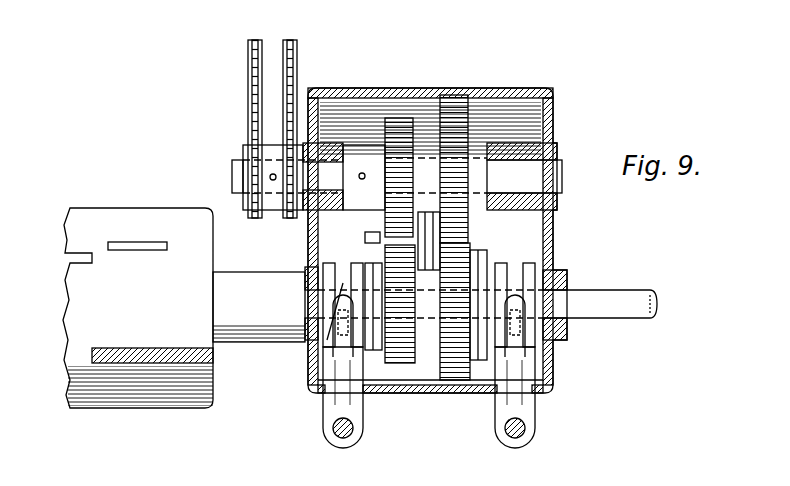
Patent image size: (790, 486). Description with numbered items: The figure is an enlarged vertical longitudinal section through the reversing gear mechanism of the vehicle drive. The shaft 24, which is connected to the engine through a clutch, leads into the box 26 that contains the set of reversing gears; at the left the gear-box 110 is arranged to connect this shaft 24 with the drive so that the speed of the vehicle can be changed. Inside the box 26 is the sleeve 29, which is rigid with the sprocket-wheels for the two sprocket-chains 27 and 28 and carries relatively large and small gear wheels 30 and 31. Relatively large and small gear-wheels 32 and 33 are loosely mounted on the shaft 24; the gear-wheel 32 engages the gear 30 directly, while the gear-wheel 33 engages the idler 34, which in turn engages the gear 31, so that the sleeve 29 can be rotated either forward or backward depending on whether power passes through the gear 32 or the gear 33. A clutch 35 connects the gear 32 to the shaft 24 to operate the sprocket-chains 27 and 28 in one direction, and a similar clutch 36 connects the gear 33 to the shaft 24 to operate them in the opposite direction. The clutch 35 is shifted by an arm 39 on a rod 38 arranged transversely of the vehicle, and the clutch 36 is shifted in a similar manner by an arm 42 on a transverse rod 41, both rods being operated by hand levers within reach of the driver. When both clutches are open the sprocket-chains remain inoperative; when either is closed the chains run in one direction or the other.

The gear-box 110 is at (88, 217).
The sprocket-chain 27 is at (250, 87).
The sprocket-chain 28 is at (297, 62).
The sleeve 29 is at (357, 152).
The gear wheel 30 is at (457, 108).
The gear wheel 31 is at (408, 117).
The box 26 is at (548, 250).
The shaft 24 is at (612, 297).
The gear-wheel 32 is at (457, 381).
The gear-wheel 33 is at (405, 364).
The idler 34 is at (365, 243).
The clutch 35 is at (483, 262).
The clutch 36 is at (305, 340).
The rod 38 is at (525, 434).
The arm 39 is at (535, 402).
The transverse rod 41 is at (336, 434).
The arm 42 is at (330, 404).